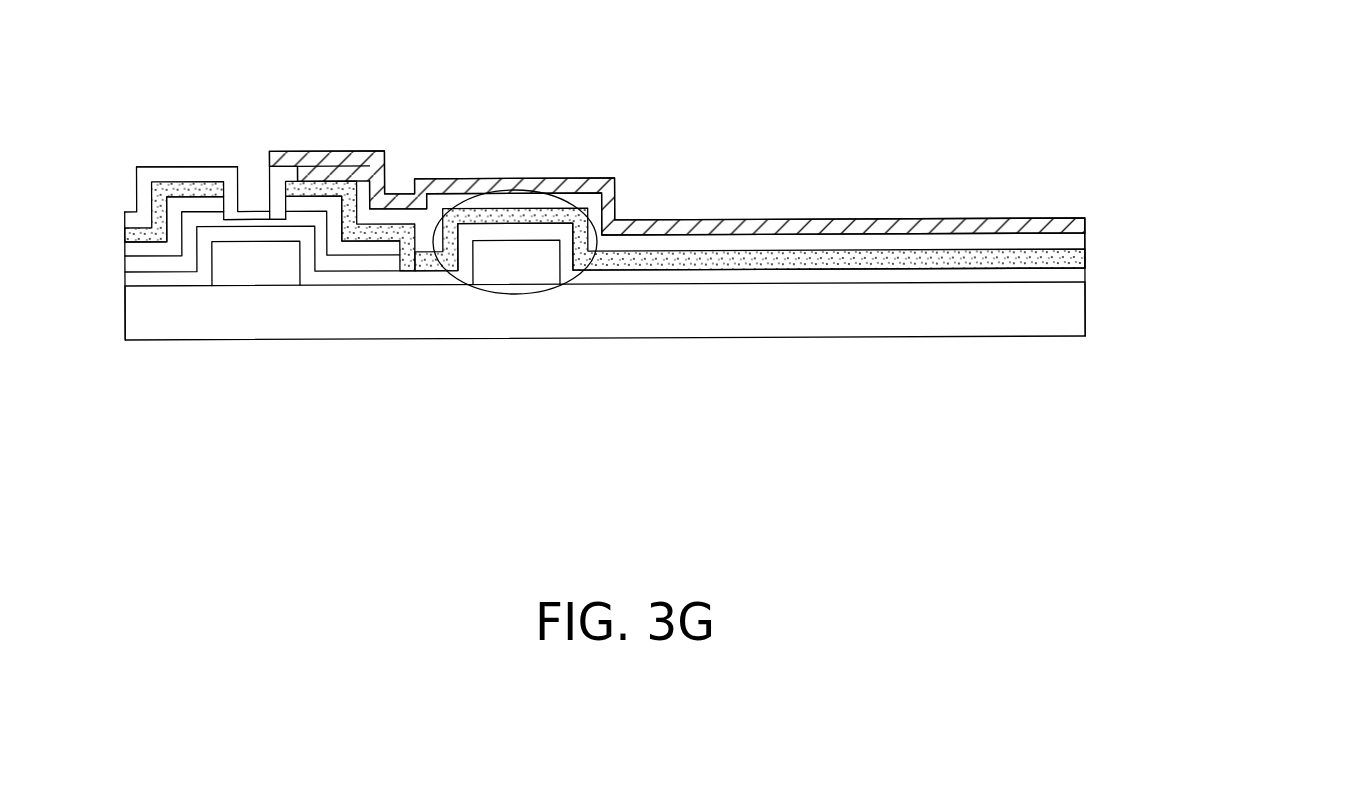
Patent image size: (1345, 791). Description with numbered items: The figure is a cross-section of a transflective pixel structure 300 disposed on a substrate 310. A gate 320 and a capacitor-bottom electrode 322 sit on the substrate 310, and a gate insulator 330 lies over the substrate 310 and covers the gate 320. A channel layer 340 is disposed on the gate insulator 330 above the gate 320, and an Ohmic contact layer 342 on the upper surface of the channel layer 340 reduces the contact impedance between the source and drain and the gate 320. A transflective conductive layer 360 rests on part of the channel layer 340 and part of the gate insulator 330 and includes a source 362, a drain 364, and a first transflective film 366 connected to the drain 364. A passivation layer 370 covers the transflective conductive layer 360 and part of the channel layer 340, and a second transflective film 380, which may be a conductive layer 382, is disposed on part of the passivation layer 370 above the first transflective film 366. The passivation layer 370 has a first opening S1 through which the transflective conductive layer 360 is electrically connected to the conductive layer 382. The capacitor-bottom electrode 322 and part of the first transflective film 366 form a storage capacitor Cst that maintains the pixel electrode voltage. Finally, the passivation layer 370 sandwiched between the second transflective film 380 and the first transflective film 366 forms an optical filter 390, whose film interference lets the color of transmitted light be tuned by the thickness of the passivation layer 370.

The pixel structure 300 is at (1122, 409).
The substrate 310 is at (1060, 312).
The gate 320 is at (260, 268).
The capacitor-bottom electrode 322 is at (500, 265).
The gate insulator 330 is at (123, 278).
The channel layer 340 is at (118, 266).
The Ohmic contact layer 342 is at (137, 219).
The transflective conductive layer 360 is at (282, 73).
The source 362 is at (198, 182).
The drain 364 is at (309, 183).
The first transflective film 366 is at (678, 252).
The passivation layer 370 is at (126, 212).
The second transflective film 380 is at (676, 184).
The conductive layer 382 is at (1088, 228).
The optical filter 390 is at (1248, 276).
The first opening S1 is at (305, 180).
The storage capacitor Cst is at (540, 294).